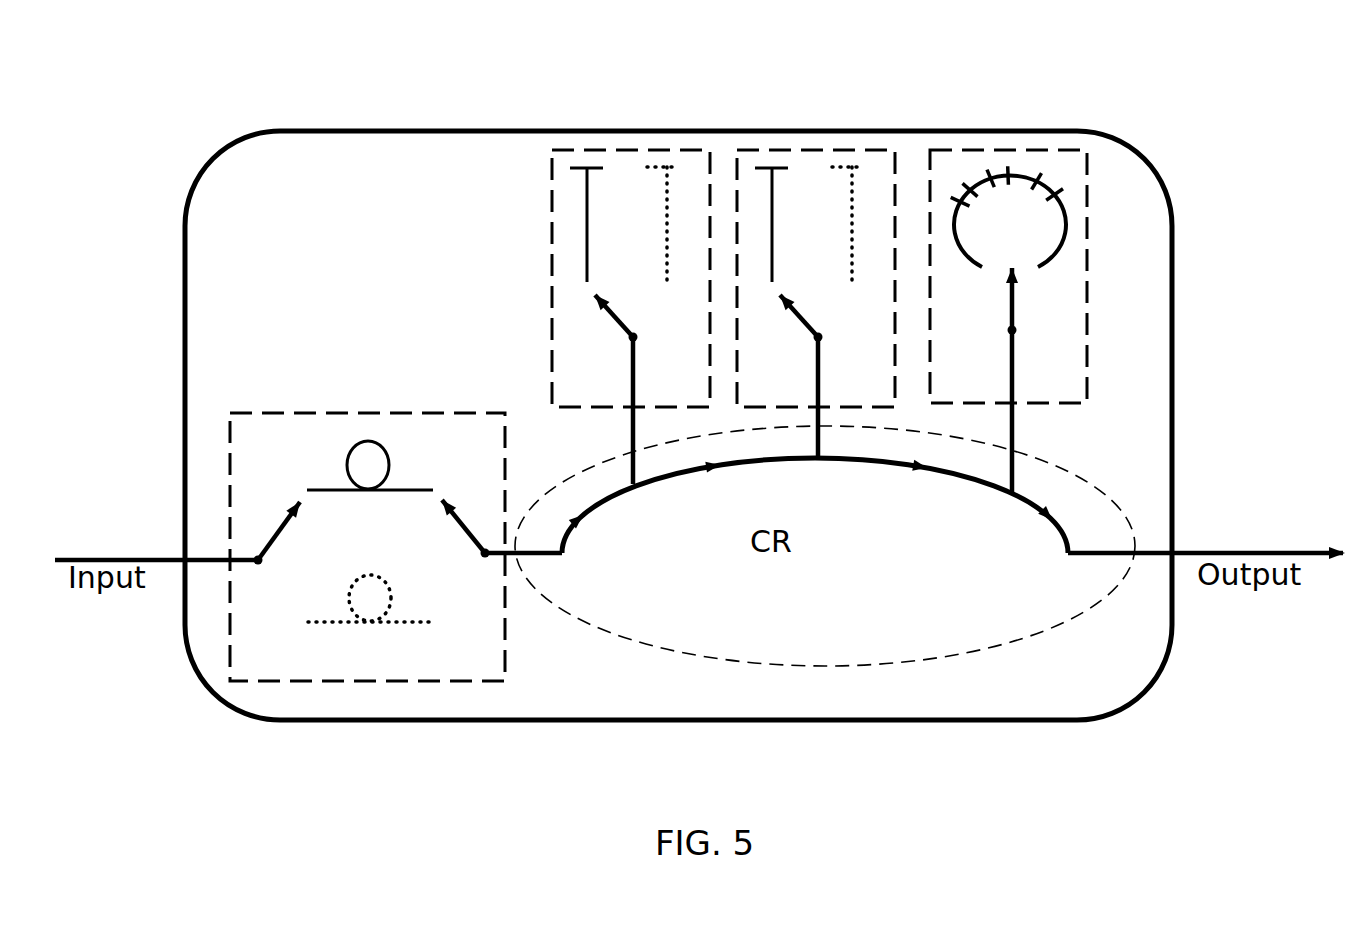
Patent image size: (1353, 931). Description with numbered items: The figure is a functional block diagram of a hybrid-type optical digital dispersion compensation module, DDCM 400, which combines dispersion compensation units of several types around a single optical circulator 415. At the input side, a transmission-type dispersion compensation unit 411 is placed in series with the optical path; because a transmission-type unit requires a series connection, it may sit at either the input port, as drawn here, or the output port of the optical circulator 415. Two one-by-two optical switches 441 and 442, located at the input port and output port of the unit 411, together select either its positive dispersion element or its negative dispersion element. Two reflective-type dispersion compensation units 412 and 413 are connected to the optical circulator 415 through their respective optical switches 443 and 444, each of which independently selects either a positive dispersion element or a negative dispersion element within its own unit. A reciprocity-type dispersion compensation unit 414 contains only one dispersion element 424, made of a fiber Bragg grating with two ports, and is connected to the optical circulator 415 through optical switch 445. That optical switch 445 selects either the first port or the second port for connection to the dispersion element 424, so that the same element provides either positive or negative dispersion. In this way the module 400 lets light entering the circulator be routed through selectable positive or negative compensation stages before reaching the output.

The hybrid-type optical digital dispersion compensation module 400 is at (1058, 721).
The transmission-type dispersion compensation unit 411 is at (352, 412).
The reflective-type dispersion compensation unit 412 is at (626, 150).
The reflective-type dispersion compensation unit 413 is at (816, 150).
The reciprocity-type dispersion compensation unit 414 is at (1046, 280).
The optical circulator 415 is at (1113, 500).
The dispersion element 424 is at (1062, 207).
The 1×2 optical switch 441 is at (276, 544).
The 1×2 optical switch 442 is at (464, 543).
The optical switch 443 is at (616, 318).
The optical switch 444 is at (801, 318).
The optical switch 445 is at (1010, 300).